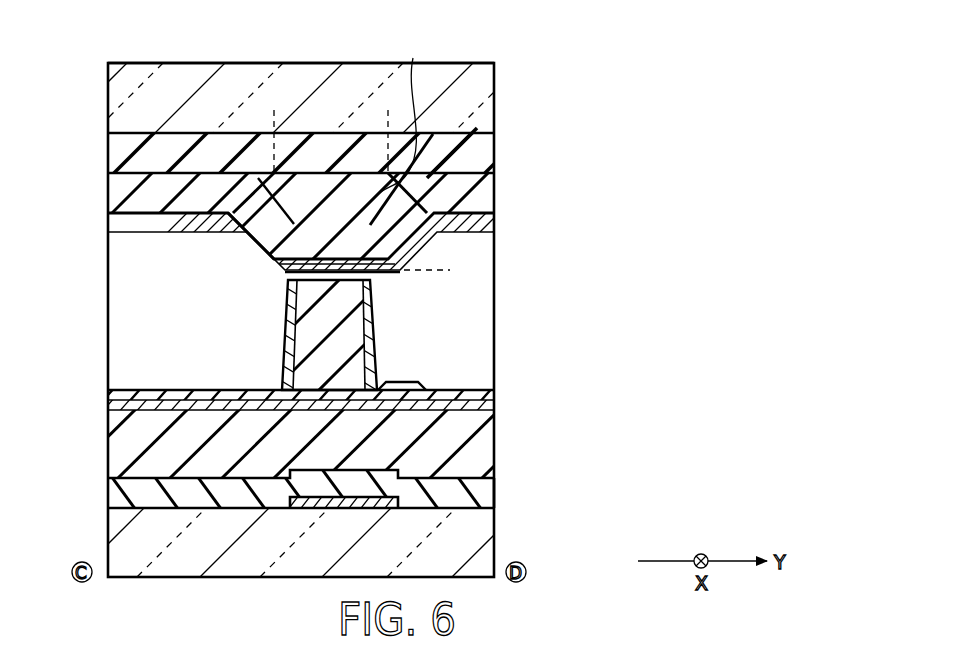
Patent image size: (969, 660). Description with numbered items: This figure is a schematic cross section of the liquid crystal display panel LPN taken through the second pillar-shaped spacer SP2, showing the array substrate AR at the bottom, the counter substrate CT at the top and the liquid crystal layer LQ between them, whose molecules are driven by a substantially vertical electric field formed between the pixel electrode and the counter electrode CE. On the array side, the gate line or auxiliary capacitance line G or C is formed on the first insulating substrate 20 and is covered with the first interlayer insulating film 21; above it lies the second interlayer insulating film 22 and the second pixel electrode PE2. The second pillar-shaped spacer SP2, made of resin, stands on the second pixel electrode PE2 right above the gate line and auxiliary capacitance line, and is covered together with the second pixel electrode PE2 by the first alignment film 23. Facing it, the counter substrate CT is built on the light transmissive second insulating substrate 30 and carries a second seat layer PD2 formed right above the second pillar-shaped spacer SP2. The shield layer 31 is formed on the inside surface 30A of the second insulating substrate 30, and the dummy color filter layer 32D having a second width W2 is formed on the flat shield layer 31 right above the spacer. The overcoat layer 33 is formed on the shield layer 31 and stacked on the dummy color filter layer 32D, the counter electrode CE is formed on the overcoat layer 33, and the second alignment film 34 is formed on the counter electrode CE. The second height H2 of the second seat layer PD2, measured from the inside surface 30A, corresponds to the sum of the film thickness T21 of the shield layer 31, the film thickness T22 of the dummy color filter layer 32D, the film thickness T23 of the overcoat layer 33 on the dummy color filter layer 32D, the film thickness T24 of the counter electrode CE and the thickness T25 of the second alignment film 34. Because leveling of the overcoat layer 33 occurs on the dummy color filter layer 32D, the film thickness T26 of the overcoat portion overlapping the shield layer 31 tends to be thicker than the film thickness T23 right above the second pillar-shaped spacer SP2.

The second insulating substrate 30 is at (108, 98).
The shield layer 31 is at (108, 155).
The overcoat layer 33 is at (108, 188).
The counter electrode CE is at (108, 220).
The second alignment film 34 is at (108, 242).
The counter substrate CT is at (497, 90).
The liquid crystal display panel LPN is at (456, 57).
The inside surface 30A is at (478, 143).
The dummy color filter layer 32D is at (408, 115).
The second width W2 is at (388, 121).
The film thickness of the shield layer T21 is at (318, 133).
The film thickness of the dummy color filter layer T22 is at (324, 259).
The film thickness of the overcoat layer overlapping the shield layer T26 is at (157, 173).
The second height H2 is at (442, 270).
The second seat layer PD2 is at (238, 250).
The film thickness of the overcoat layer on the dummy color filter layer T23 is at (288, 265).
The film thickness of the counter electrode T24 is at (346, 259).
The thickness of the second alignment film T25 is at (340, 278).
The second pillar-shaped spacer SP2 is at (278, 338).
The first alignment film 23 is at (108, 395).
The second pixel electrode PE2 is at (108, 410).
The second interlayer insulating film 22 is at (108, 455).
The first interlayer insulating film 21 is at (108, 491).
The gate line or auxiliary capacitance line G or C is at (383, 510).
The array substrate AR is at (495, 489).
The first insulating substrate 20 is at (108, 533).
The liquid crystal layer LQ is at (108, 325).